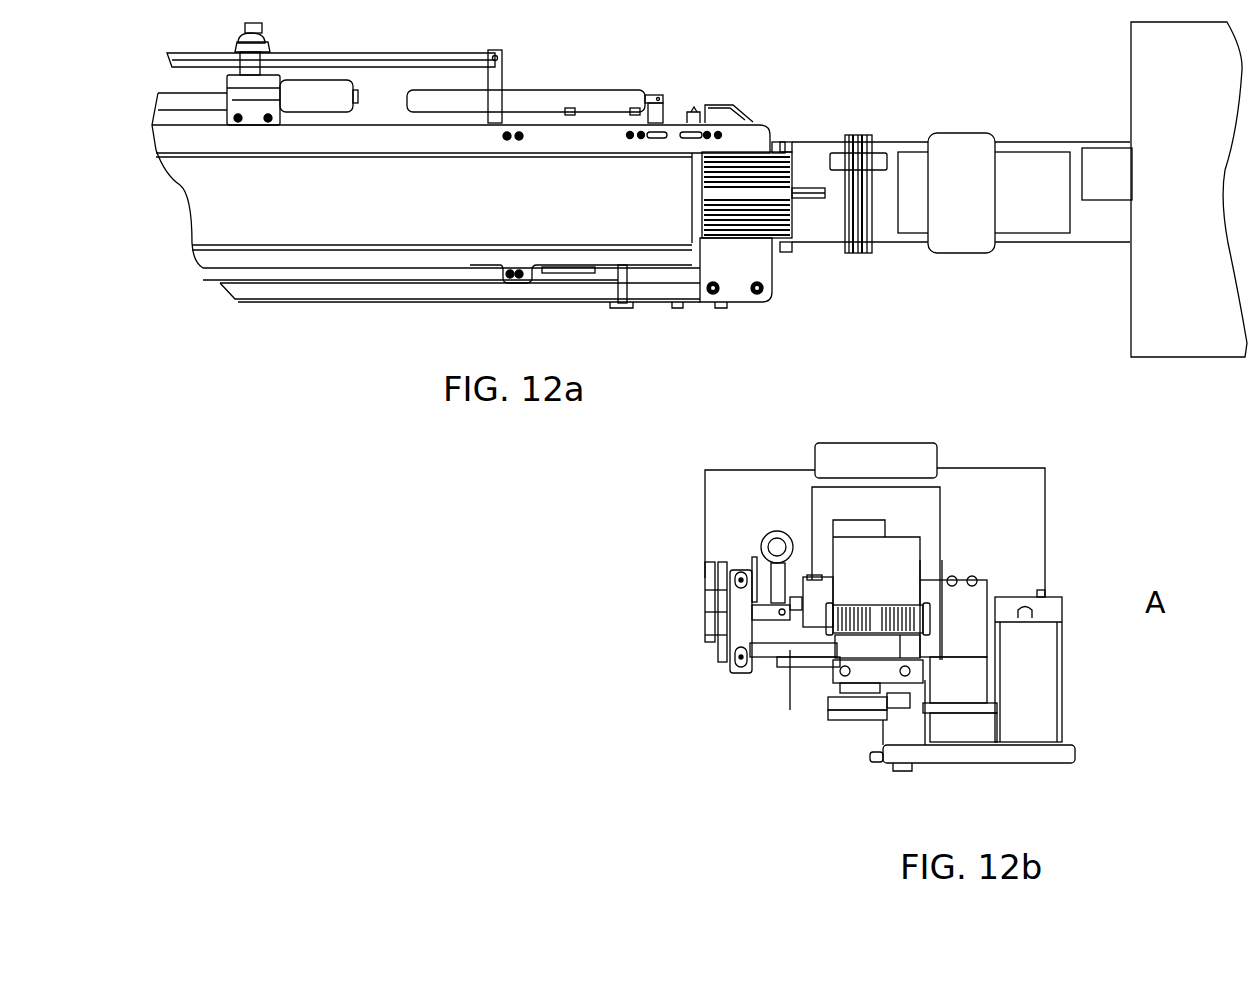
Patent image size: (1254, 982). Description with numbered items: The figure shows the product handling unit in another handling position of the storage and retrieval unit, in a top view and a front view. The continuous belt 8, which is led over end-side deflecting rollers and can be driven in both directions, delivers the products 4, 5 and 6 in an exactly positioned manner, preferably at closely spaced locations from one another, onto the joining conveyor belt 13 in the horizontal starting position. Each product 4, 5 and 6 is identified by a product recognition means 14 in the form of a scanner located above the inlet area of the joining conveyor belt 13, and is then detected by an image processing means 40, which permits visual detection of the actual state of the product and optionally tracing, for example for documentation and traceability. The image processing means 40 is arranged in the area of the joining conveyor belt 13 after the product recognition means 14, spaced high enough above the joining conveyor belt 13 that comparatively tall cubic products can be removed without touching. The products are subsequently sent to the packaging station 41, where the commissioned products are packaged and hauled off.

In FIG. 12A, the continuous belt 8 is at (428, 207).
In FIG. 12A, the product 5 is at (877, 160).
In FIG. 12A, the image processing means 40 is at (965, 142).
In FIG. 12B, the image processing means 40 is at (900, 450).
In FIG. 12A, the product 4 is at (1038, 208).
In FIG. 12B, the product 4 is at (887, 582).
In FIG. 12A, the product 6 is at (1118, 187).
In FIG. 12A, the joining conveyor belt 13 is at (1093, 232).
In FIG. 12A, the packaging station 41 is at (1185, 333).
In FIG. 12B, the packaging station 41 is at (1040, 535).
In FIG. 12B, the product recognition means 14 is at (940, 506).